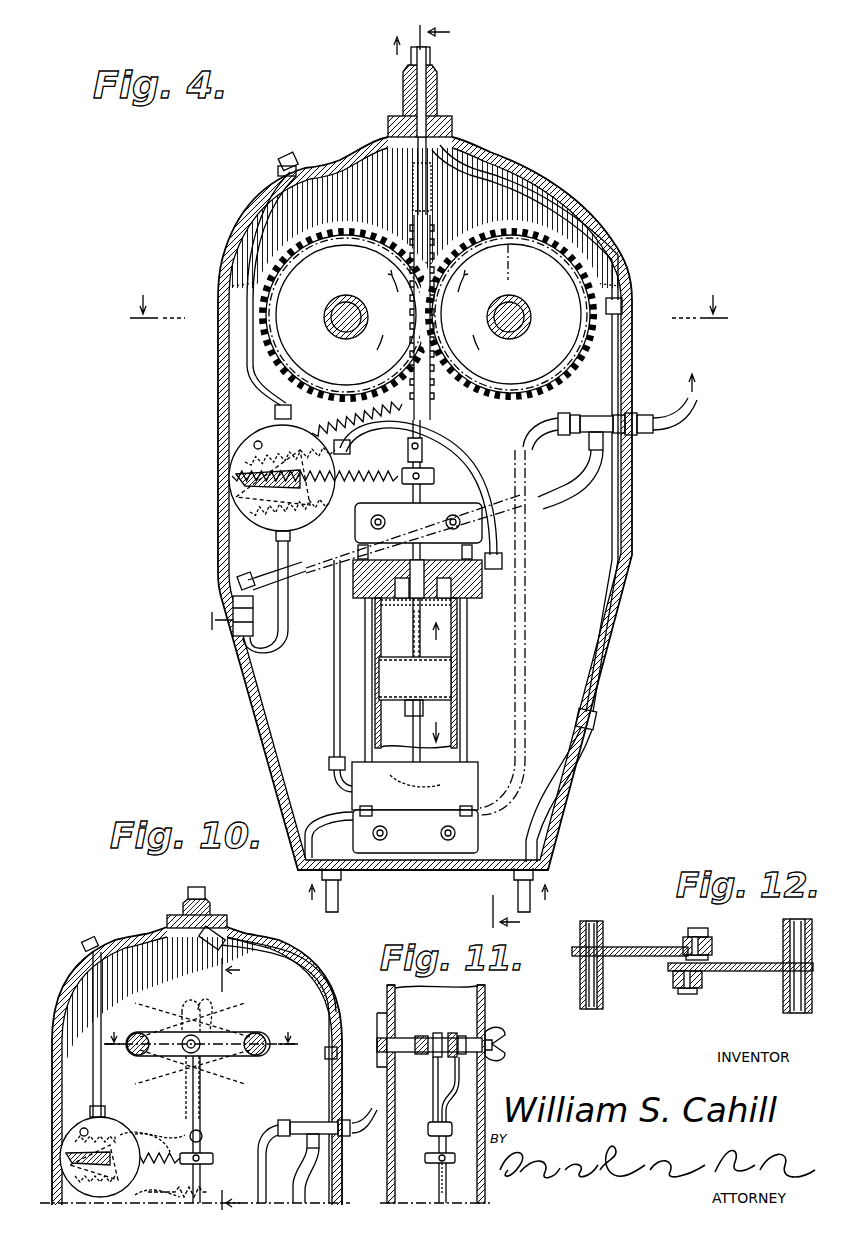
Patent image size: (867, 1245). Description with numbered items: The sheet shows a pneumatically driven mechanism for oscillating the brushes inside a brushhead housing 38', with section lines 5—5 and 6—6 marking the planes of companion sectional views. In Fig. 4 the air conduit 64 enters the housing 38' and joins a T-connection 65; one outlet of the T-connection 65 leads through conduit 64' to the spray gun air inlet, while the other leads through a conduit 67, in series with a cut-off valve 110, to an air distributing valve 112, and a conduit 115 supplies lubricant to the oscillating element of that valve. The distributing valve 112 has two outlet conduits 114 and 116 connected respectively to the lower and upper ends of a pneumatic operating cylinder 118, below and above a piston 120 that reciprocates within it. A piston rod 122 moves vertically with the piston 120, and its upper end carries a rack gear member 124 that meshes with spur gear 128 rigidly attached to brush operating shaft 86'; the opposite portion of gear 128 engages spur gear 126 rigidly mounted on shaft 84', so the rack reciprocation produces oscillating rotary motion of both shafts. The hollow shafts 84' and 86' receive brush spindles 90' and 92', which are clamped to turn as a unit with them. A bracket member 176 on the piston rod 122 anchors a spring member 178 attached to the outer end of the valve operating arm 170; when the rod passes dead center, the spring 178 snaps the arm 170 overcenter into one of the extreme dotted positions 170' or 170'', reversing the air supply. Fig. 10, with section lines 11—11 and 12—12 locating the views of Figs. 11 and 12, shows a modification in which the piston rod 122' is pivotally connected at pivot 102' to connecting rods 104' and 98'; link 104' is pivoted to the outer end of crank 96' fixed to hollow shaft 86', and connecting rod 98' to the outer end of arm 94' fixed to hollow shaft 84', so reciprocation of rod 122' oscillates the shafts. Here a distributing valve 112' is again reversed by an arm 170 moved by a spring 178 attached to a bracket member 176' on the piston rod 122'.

In FIG. 4, the section line 5— 5 is at (478, 477).
In FIG. 4, the section line 6— 6 is at (429, 295).
In FIG. 10, the section line 11— 11 is at (245, 1086).
In FIG. 10, the section line 12— 12 is at (203, 1027).
In FIG. 4, the brushhead housing 38' is at (445, 453).
In FIG. 4, the air conduit 64 is at (463, 528).
In FIG. 4, the conduit 64' is at (698, 402).
In FIG. 4, the T-connection 65 is at (596, 418).
In FIG. 4, the conduit 67 is at (573, 495).
In FIG. 4, the brush operating shaft 84' is at (326, 317).
In FIG. 10, the brush operating shaft 84' is at (127, 1060).
In FIG. 12, the brush operating shaft 84' is at (613, 965).
In FIG. 4, the brush operating shaft 86' is at (531, 317).
In FIG. 10, the brush operating shaft 86' is at (278, 1060).
In FIG. 12, the brush operating shaft 86' is at (777, 966).
In FIG. 4, the spindle 90' is at (326, 327).
In FIG. 4, the spindle 92' is at (495, 333).
In FIG. 10, the brush operating arm 94' is at (200, 1037).
In FIG. 11, the brush operating arm 94' is at (476, 1027).
In FIG. 12, the brush operating arm 94' is at (630, 929).
In FIG. 10, the brush operating arm or crank 96' is at (229, 1012).
In FIG. 11, the brush operating arm or crank 96' is at (434, 1025).
In FIG. 12, the brush operating arm or crank 96' is at (740, 953).
In FIG. 10, the connecting rod 98' is at (224, 1061).
In FIG. 11, the connecting rod 98' is at (460, 1089).
In FIG. 12, the connecting rod 98' is at (719, 931).
In FIG. 10, the point of pivotal connection 102' is at (225, 1129).
In FIG. 11, the point of pivotal connection 102' is at (424, 1150).
In FIG. 10, the connecting rod or link 104' is at (171, 1088).
In FIG. 11, the connecting rod or link 104' is at (417, 1089).
In FIG. 12, the connecting rod or link 104' is at (659, 998).
In FIG. 4, the cut-off valve 110 is at (210, 618).
In FIG. 4, the air distributing valve 112 is at (236, 483).
In FIG. 10, the distributing valve 112' is at (122, 1143).
In FIG. 4, the outlet conduit 114 is at (336, 706).
In FIG. 4, the conduit 115 is at (259, 243).
In FIG. 4, the outlet conduit 116 is at (478, 438).
In FIG. 4, the pneumatic operating cylinder 118 is at (457, 715).
In FIG. 4, the piston 120 is at (380, 680).
In FIG. 4, the piston rod 122 is at (462, 605).
In FIG. 10, the piston rod 122' is at (207, 1181).
In FIG. 11, the piston rod 122' is at (426, 1174).
In FIG. 4, the rack gear member 124 is at (428, 248).
In FIG. 4, the spur gear 126 is at (346, 315).
In FIG. 4, the spur gear 128 is at (511, 314).
In FIG. 4, the valve operating arm 170 is at (283, 464).
In FIG. 4, the dotted-outline position of valve operating arm 170' is at (233, 498).
In FIG. 10, the dotted-outline position of valve operating arm 170' is at (81, 1041).
In FIG. 4, the dotted-outline position of valve operating arm 170'' is at (236, 451).
In FIG. 4, the bracket member 176 is at (419, 540).
In FIG. 10, the bracket member 176' is at (223, 1147).
In FIG. 4, the spring member 178 is at (333, 443).
In FIG. 10, the spring member 178 is at (125, 1161).